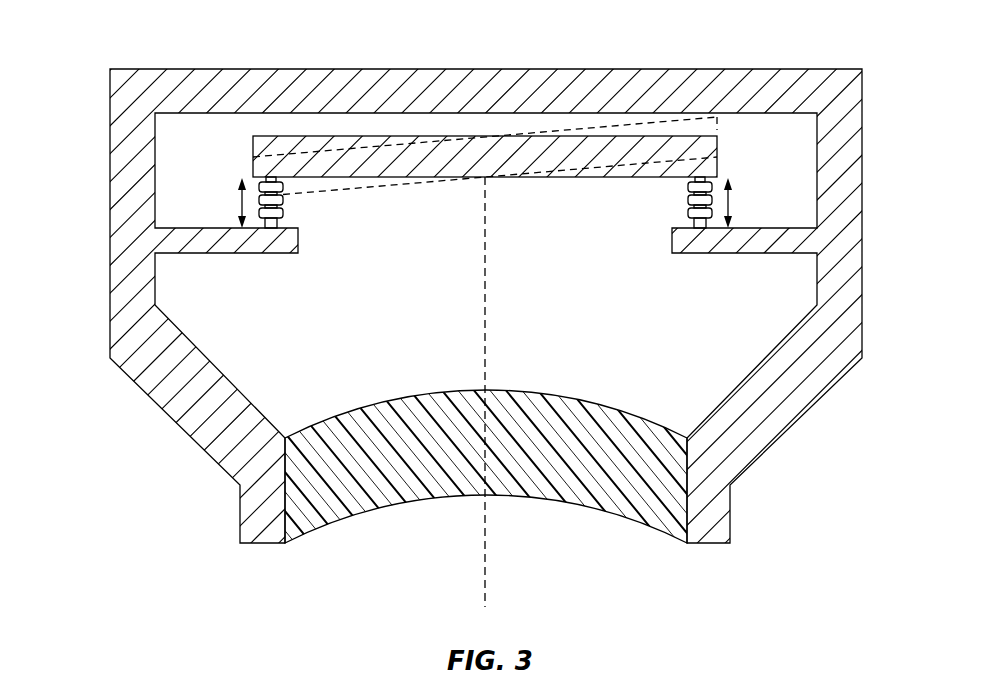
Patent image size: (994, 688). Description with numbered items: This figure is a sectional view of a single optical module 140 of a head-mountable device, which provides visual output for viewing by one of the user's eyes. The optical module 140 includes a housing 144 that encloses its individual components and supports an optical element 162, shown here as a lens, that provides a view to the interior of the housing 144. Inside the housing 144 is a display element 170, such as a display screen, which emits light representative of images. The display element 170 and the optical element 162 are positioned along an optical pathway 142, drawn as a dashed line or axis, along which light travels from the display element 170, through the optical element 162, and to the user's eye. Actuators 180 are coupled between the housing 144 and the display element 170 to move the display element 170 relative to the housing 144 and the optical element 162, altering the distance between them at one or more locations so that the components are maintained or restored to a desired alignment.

The optical module 140 is at (98, 10).
The optical pathway 142 is at (484, 559).
The housing 144 is at (850, 178).
The optical element 162 is at (572, 483).
The display element 170 is at (556, 178).
The actuators 180 is at (283, 220).